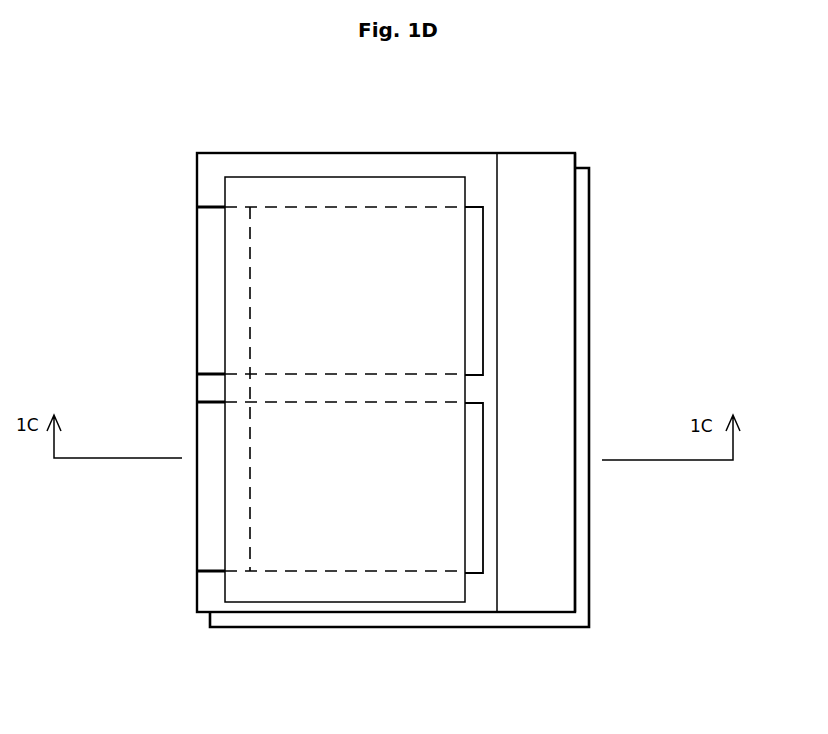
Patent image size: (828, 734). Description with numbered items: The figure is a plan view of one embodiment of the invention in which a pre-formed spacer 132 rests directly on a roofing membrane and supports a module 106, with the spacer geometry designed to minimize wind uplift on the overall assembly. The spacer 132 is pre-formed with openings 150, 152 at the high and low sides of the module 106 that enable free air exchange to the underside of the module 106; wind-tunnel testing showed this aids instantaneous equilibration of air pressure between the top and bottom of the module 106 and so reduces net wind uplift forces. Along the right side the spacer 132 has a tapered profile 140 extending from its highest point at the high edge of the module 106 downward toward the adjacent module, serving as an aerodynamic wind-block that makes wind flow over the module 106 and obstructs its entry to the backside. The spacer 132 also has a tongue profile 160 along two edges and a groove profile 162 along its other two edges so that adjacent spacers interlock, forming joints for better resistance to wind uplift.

The module 106 is at (280, 270).
The spacer 132 is at (480, 600).
The tapered profile 140 is at (553, 365).
The openings 150 is at (482, 448).
The openings 152 is at (216, 425).
The tongue profile 160 is at (329, 628).
The groove profile 162 is at (450, 159).